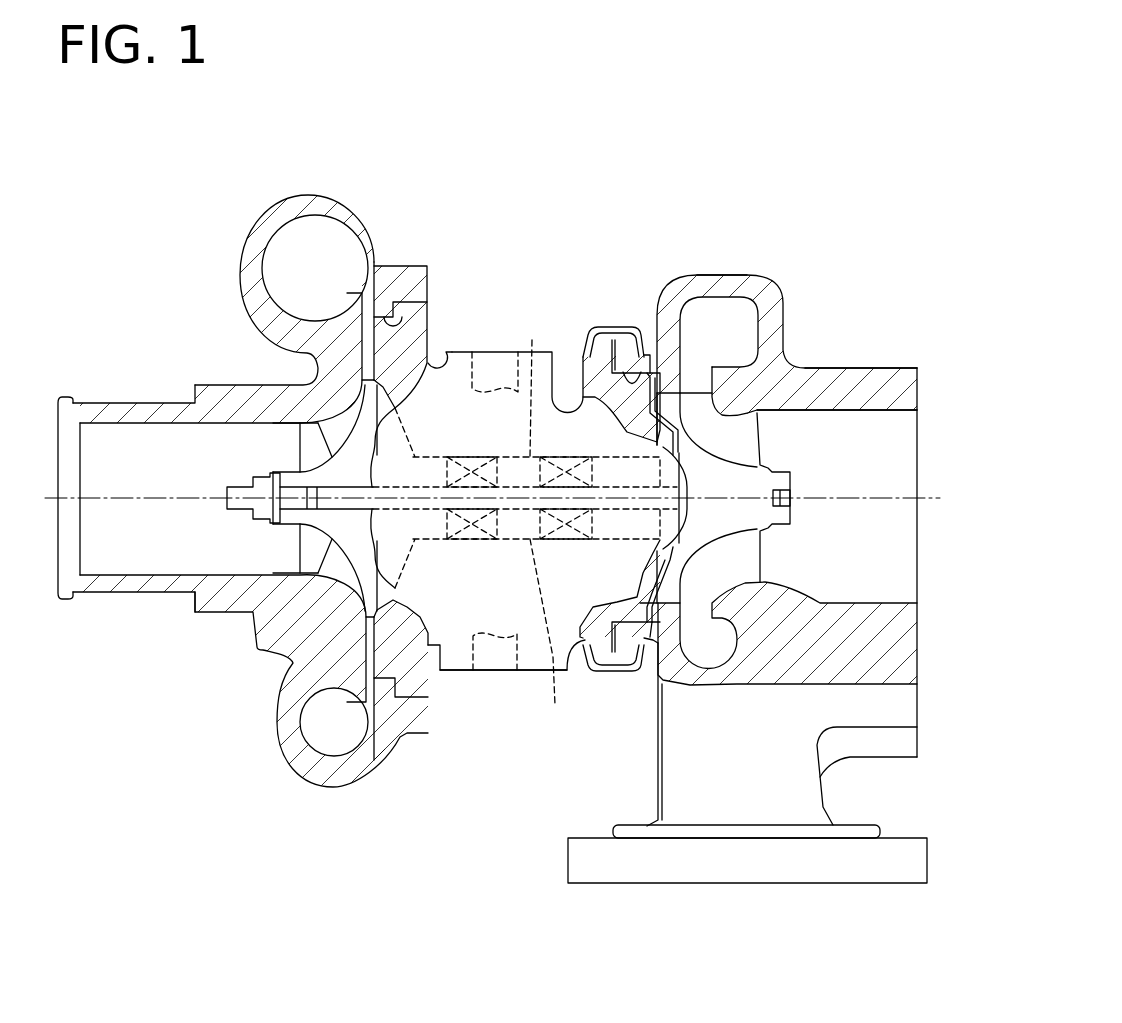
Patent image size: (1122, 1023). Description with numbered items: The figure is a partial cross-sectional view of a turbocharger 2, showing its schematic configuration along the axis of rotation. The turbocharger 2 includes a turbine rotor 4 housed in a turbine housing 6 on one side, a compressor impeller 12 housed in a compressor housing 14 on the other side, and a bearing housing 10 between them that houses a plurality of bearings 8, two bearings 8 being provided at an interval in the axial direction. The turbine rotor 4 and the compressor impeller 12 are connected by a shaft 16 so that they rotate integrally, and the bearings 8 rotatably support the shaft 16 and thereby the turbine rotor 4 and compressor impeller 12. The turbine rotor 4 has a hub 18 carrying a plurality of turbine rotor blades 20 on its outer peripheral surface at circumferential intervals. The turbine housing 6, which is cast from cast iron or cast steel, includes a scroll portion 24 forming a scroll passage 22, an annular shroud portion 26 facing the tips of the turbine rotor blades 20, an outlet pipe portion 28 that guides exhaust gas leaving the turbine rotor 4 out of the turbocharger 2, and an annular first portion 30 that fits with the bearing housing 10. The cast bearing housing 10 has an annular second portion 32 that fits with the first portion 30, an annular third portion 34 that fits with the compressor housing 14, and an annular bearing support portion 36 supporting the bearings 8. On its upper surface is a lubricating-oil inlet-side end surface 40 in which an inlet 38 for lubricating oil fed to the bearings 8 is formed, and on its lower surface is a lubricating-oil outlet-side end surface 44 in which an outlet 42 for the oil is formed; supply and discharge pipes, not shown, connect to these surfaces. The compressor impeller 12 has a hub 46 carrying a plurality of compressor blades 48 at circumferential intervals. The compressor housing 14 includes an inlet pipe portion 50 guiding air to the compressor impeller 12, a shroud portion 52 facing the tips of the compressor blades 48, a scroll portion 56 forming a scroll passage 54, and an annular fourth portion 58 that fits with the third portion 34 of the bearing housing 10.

The turbocharger 2 is at (784, 182).
The turbine rotor 4 is at (795, 433).
The turbine housing 6 is at (783, 303).
The bearing 8 is at (457, 457).
The bearing housing 10 is at (543, 352).
The compressor impeller 12 is at (252, 446).
The compressor housing 14 is at (146, 402).
The shaft 16 is at (550, 638).
The hub 18 is at (747, 538).
The turbine rotor blade 20 is at (733, 427).
The scroll passage 22 is at (703, 320).
The scroll portion 24 is at (728, 277).
The shroud portion 26 is at (727, 397).
The outlet pipe portion 28 is at (901, 368).
The first portion 30 is at (636, 385).
The second portion 32 is at (628, 385).
The third portion 34 is at (392, 318).
The bearing support portion 36 is at (535, 353).
The inlet 38 is at (500, 350).
The lubricating-oil inlet-side end surface 40 is at (467, 352).
The outlet 42 is at (493, 672).
The lubricating-oil outlet-side end surface 44 is at (453, 672).
The hub 46 is at (290, 517).
The compressor blade 48 is at (310, 557).
The inlet pipe portion 50 is at (100, 590).
The shroud portion 52 is at (337, 592).
The scroll passage 54 is at (297, 244).
The scroll portion 56 is at (327, 193).
The fourth portion 58 is at (382, 312).